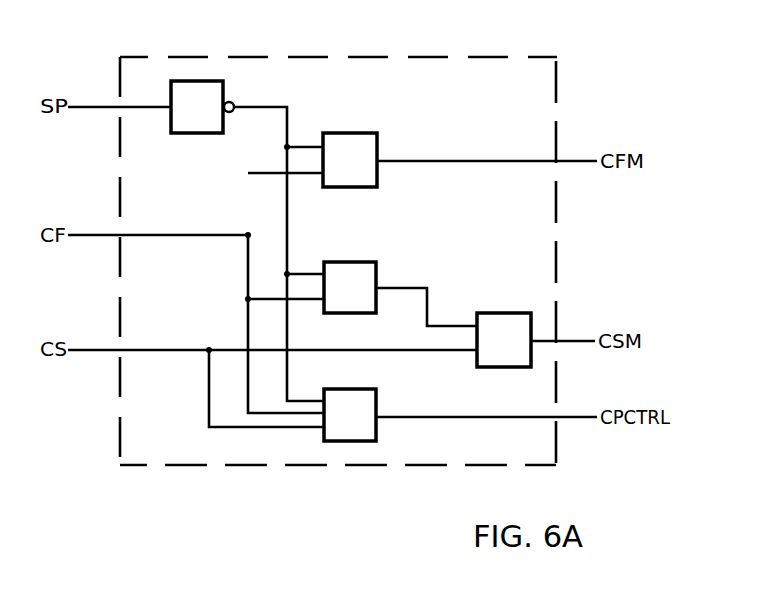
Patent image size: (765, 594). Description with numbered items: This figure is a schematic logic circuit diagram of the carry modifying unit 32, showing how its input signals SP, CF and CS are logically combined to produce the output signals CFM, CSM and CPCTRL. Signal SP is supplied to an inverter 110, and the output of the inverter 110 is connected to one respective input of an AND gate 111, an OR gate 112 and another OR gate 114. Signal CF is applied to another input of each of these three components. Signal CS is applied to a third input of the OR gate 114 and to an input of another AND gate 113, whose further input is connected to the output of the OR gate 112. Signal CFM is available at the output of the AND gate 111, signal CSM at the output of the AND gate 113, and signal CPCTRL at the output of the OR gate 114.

The carry modifying unit 32 is at (547, 83).
The inverter 110 is at (225, 88).
The AND gate 111 is at (377, 145).
The OR gate 112 is at (377, 277).
The AND gate 113 is at (503, 313).
The OR gate 114 is at (377, 413).